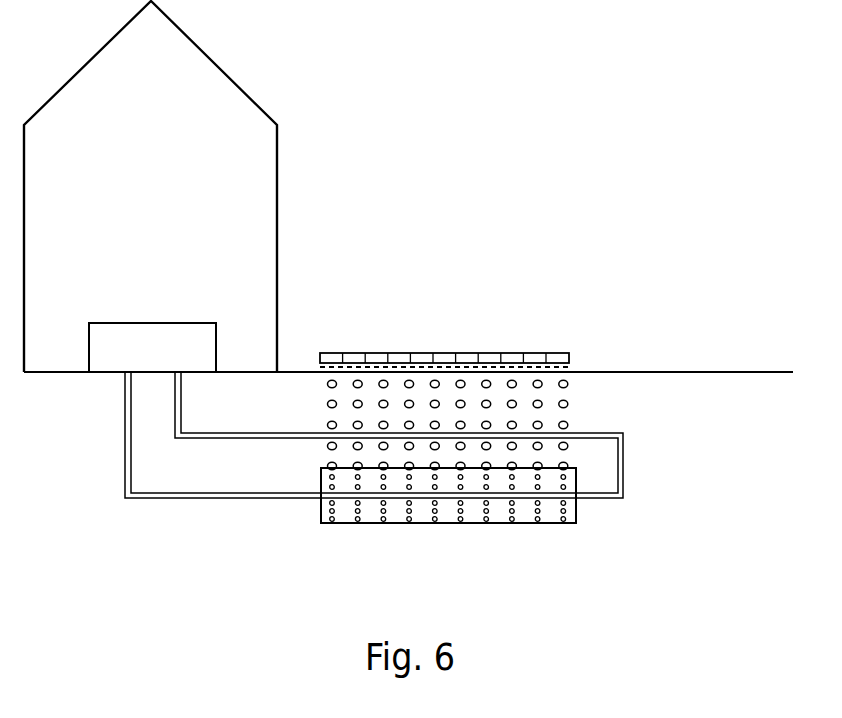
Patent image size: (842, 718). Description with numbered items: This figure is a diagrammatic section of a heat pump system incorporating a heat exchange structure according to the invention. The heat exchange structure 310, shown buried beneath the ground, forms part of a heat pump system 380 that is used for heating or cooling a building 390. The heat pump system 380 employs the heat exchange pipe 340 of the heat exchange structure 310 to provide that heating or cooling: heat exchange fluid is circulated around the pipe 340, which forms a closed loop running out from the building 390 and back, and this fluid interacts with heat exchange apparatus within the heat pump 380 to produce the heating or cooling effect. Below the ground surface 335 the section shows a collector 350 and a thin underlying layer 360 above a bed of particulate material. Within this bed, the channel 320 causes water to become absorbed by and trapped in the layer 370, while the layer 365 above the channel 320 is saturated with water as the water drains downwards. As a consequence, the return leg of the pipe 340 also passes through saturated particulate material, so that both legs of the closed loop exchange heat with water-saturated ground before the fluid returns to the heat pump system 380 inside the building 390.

The building 390 is at (278, 198).
The heat pump system 380 is at (146, 322).
The ground surface 335 is at (692, 370).
The heat exchange pipe 340 is at (273, 503).
The solar collector 350 is at (558, 352).
The insulation layer 360 is at (572, 367).
The layer 365 is at (570, 403).
The channel 320 is at (510, 524).
The layer 370 is at (435, 524).
The heat exchange structure 310 is at (639, 563).